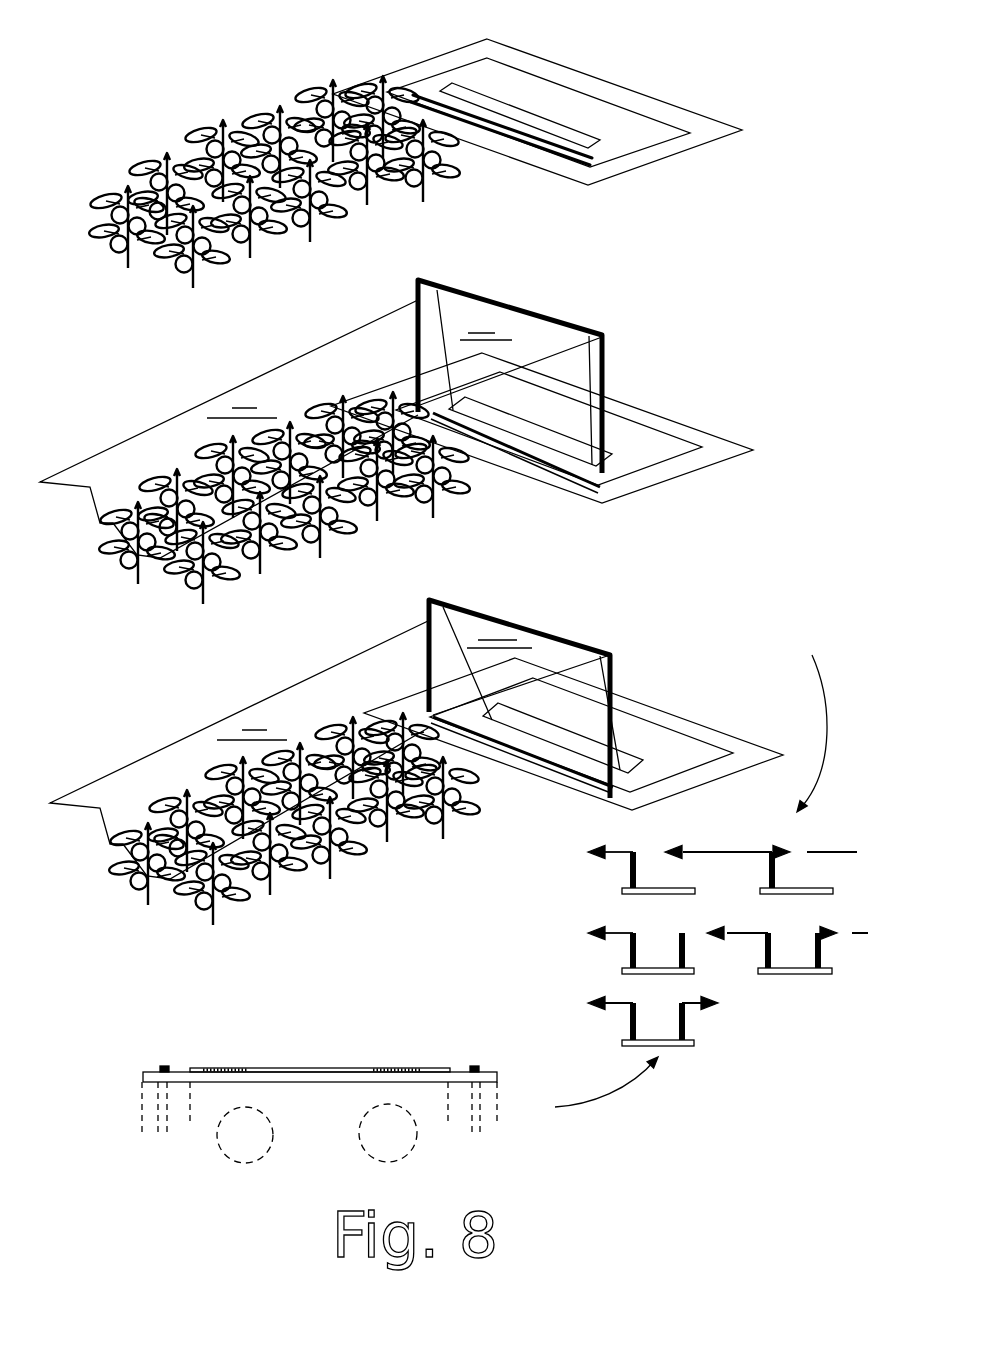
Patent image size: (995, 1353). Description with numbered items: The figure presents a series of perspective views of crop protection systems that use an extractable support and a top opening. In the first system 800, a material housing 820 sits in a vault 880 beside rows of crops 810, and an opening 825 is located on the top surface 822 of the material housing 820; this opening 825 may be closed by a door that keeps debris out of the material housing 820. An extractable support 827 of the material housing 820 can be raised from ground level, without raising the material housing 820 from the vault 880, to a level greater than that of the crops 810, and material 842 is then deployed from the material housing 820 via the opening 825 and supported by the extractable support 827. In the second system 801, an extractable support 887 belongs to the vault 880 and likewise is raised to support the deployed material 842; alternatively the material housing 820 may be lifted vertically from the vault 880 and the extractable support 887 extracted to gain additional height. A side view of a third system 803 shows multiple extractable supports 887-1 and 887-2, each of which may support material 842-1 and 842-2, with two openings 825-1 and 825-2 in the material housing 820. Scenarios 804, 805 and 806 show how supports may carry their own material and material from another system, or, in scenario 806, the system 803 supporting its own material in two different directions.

The crop protection system 800 is at (457, 544).
The crop protection system 801 is at (445, 762).
The crop protection system 803 is at (316, 1064).
The scenario 804 is at (563, 872).
The scenario 805 is at (563, 923).
The scenario 806 is at (563, 980).
The crops 810 is at (193, 77).
The material housing 820 is at (437, 570).
The top surface 822 is at (520, 115).
The opening 825 is at (458, 100).
The opening 825-1 is at (240, 1068).
The opening 825-2 is at (402, 1068).
The extractable support 827 is at (602, 337).
The material 842 is at (205, 400).
The material 842-1 is at (220, 1150).
The material 842-2 is at (372, 1112).
The vault 880 is at (553, 172).
The extractable support 887 is at (613, 658).
The extractable support 887-1 is at (162, 1066).
The extractable support 887-2 is at (478, 1066).